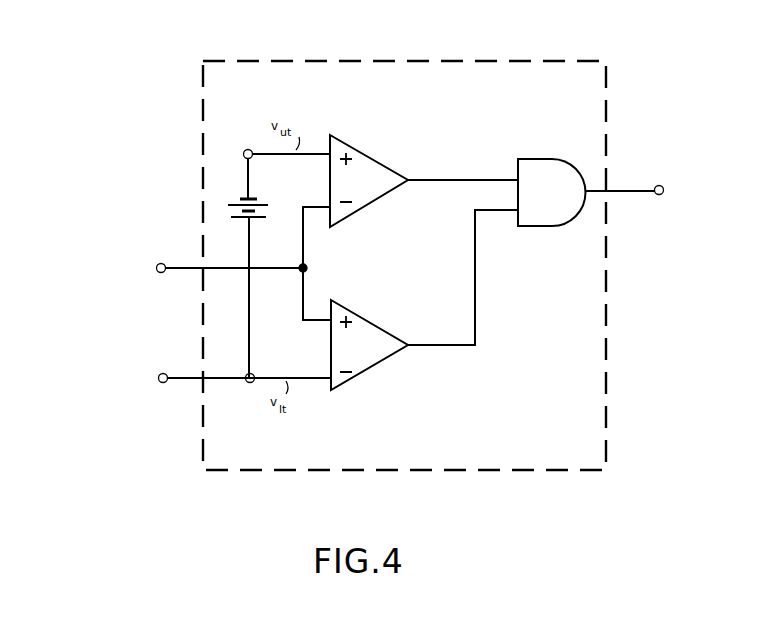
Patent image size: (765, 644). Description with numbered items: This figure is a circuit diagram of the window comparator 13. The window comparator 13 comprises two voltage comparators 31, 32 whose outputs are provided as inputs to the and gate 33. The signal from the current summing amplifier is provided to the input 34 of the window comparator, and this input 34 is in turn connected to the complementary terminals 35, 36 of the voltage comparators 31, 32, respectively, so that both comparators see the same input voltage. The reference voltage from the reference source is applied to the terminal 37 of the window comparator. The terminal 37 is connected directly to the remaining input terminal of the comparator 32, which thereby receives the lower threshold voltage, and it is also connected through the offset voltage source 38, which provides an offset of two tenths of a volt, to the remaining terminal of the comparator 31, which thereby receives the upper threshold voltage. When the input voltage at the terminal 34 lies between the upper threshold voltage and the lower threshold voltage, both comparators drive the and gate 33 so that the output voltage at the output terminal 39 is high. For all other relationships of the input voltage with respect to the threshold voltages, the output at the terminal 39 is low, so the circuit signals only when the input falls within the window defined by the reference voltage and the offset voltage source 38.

The window comparator 13 is at (610, 348).
The voltage comparator 31 is at (365, 207).
The voltage comparator 32 is at (372, 332).
The and gate 33 is at (551, 217).
The input 34 is at (159, 274).
The complementary terminal 35 is at (322, 212).
The complementary terminal 36 is at (316, 316).
The terminal 37 is at (158, 380).
The offset voltage source 38 is at (238, 203).
The output terminal 39 is at (658, 196).